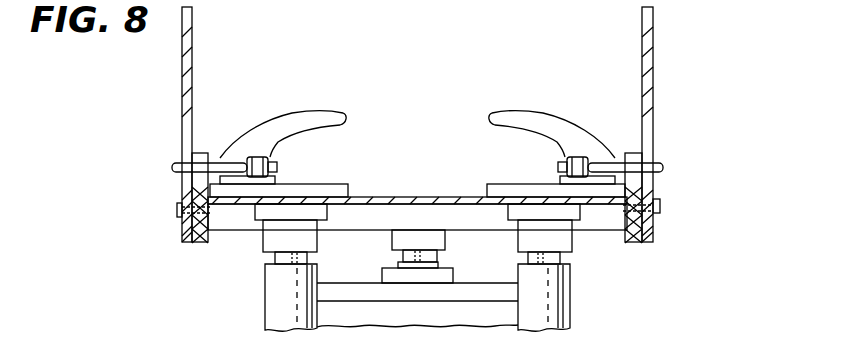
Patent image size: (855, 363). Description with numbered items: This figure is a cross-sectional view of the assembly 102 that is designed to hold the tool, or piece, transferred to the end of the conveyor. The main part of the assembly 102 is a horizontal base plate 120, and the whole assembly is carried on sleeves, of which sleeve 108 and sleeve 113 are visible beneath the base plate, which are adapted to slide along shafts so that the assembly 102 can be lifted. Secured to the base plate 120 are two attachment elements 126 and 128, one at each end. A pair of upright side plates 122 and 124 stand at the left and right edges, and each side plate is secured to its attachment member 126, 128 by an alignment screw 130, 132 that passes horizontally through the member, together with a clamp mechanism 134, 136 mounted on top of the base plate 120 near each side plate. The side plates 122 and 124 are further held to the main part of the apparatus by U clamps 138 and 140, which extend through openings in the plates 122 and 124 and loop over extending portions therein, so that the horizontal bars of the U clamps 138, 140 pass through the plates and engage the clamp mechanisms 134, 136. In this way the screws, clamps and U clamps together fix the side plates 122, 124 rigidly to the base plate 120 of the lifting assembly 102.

The assembly 102 is at (670, 225).
The sleeve 108 is at (268, 322).
The sleeve 113 is at (553, 317).
The base plate 120 is at (376, 193).
The side plate 122 is at (181, 101).
The side plate 124 is at (655, 86).
The attachment element 126 is at (207, 243).
The attachment element 128 is at (643, 233).
The alignment screw 130 is at (177, 207).
The alignment screw 132 is at (662, 206).
The clamp mechanism 134 is at (302, 103).
The clamp mechanism 136 is at (575, 82).
The U clamp 138 is at (218, 160).
The U clamp 140 is at (616, 160).